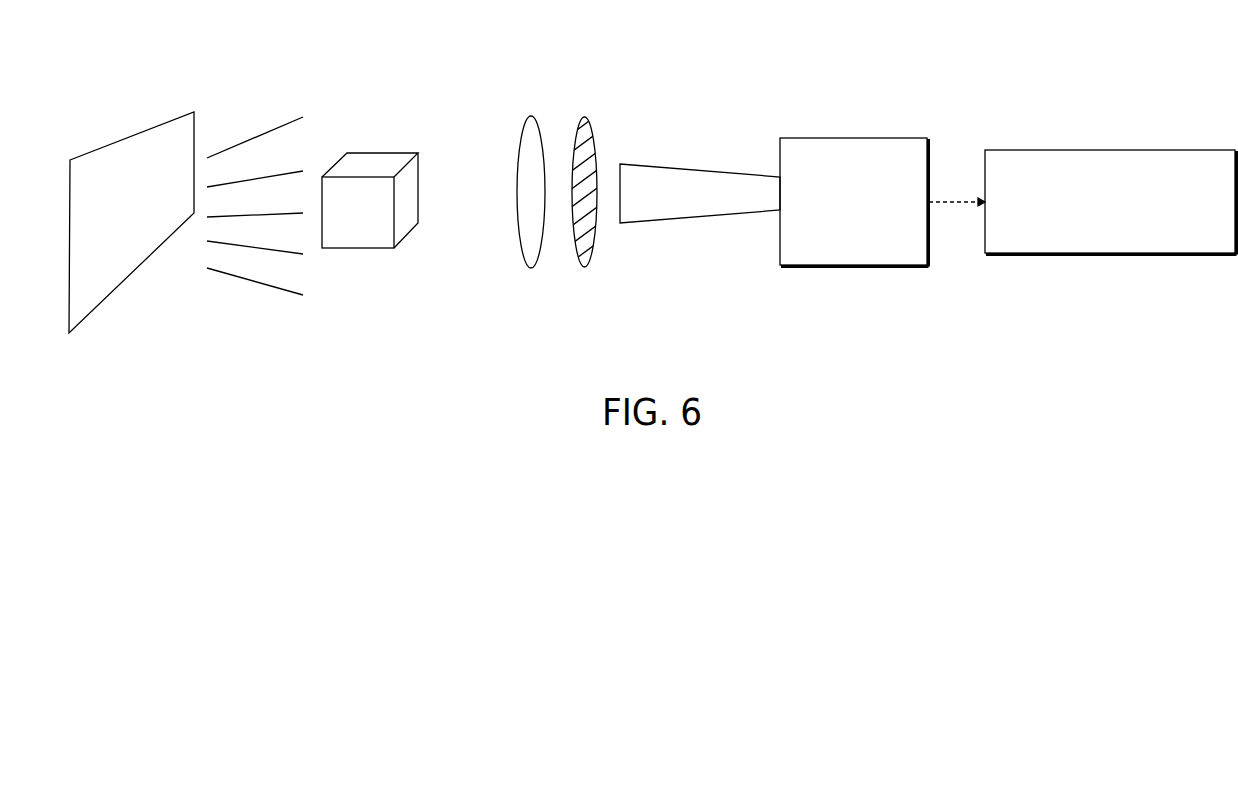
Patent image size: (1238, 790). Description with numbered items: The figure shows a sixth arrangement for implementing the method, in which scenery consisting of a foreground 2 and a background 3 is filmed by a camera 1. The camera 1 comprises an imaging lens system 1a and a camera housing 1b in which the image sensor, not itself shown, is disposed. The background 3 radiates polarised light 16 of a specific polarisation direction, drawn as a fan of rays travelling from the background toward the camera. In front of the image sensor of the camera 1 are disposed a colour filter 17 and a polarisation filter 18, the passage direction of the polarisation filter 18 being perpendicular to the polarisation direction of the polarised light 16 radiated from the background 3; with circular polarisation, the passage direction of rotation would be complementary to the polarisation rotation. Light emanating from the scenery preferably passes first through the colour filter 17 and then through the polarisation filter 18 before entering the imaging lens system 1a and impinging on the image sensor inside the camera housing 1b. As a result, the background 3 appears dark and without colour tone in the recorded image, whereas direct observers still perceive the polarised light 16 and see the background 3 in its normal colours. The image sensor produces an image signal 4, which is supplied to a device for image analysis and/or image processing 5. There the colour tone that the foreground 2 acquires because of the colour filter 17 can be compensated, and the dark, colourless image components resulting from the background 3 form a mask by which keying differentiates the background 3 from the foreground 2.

The camera 1 is at (774, 180).
The imaging lens system 1a is at (709, 170).
The camera housing 1b is at (819, 138).
The foreground 2 is at (380, 152).
The background 3 is at (139, 133).
The image signal 4 is at (955, 200).
The device for image analysis and/or image processing 5 is at (1109, 150).
The polarised light 16 is at (257, 136).
The colour filter 17 is at (532, 116).
The polarisation filter 18 is at (586, 117).